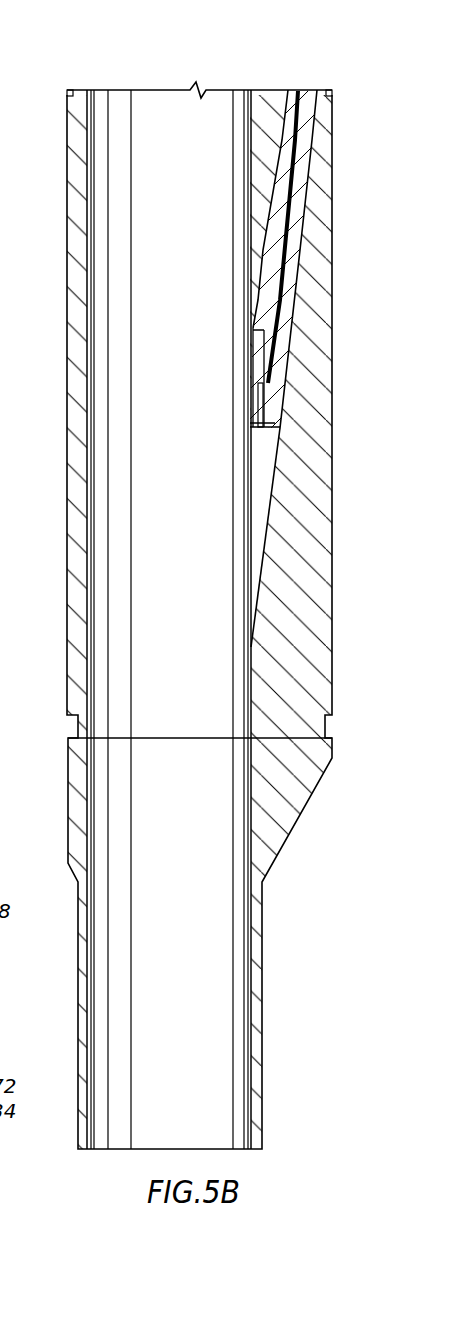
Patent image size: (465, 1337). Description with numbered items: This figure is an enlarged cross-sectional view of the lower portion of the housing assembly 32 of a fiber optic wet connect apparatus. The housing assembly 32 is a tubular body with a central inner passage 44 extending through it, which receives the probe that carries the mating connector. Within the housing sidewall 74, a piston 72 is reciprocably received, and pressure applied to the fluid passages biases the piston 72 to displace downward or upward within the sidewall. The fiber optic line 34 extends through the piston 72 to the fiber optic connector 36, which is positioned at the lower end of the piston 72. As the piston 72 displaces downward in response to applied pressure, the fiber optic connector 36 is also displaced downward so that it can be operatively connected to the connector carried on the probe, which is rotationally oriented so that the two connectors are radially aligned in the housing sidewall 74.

The housing assembly 32 is at (333, 72).
The fiber optic line 34 is at (290, 203).
The fiber optic connector 36 is at (275, 421).
The inner passage 44 is at (142, 585).
The piston 72 is at (300, 232).
The housing sidewall 74 is at (332, 393).